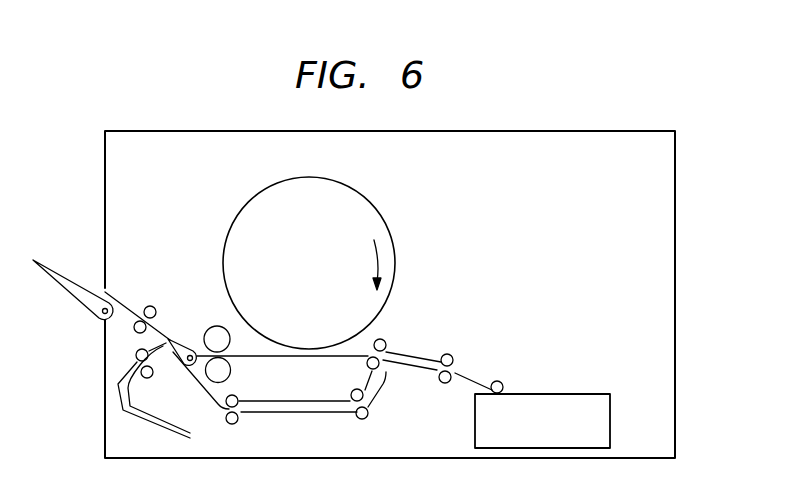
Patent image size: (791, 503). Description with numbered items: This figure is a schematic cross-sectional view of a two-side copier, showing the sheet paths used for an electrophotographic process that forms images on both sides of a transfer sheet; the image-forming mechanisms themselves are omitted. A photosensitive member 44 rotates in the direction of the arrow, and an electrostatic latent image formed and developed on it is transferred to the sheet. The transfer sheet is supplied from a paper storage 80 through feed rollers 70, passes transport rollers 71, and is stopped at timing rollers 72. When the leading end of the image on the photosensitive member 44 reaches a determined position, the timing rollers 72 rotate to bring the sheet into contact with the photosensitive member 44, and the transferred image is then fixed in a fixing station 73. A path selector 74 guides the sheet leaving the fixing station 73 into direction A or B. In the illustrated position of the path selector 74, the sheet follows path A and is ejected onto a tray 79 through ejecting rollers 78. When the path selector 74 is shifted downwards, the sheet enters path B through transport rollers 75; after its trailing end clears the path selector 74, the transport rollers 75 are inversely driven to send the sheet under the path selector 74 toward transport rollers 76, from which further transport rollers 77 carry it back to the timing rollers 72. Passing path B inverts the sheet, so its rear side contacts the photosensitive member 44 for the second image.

The photosensitive member 44 is at (381, 213).
The feed rollers 70 is at (500, 382).
The transport rollers 71 is at (452, 374).
The timing rollers 72 is at (381, 358).
The fixing station 73 is at (230, 376).
The path selector 74 is at (186, 348).
The transport rollers 75 is at (145, 379).
The transport rollers 76 is at (239, 418).
The roller pair 77 is at (356, 413).
The ejecting rollers 78 is at (143, 308).
The tray 79 is at (77, 298).
The paper storage 80 is at (579, 394).
The path A is at (154, 326).
The path B is at (171, 421).